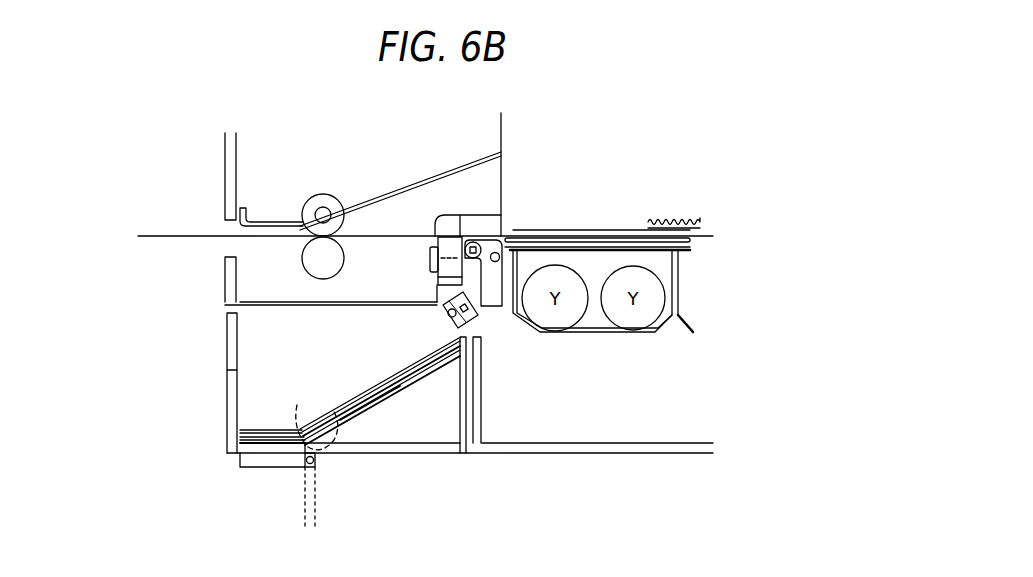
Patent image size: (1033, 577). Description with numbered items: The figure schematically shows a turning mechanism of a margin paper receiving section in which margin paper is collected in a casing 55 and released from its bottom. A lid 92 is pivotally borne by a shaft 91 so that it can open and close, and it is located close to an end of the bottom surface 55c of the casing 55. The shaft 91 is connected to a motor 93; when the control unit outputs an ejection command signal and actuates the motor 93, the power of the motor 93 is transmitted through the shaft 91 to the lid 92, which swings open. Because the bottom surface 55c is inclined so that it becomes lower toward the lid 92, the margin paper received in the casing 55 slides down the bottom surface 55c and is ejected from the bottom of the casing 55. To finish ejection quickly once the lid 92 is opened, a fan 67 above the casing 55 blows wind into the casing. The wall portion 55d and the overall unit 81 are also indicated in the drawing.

The casing 55 is at (438, 447).
The bottom surface 55c is at (366, 415).
The side wall of cassette 55d is at (237, 328).
The fan 67 is at (476, 322).
The sheet feeding unit 81 is at (220, 485).
The shaft 91 is at (315, 467).
The lid 92 is at (270, 467).
The motor 93 is at (296, 407).